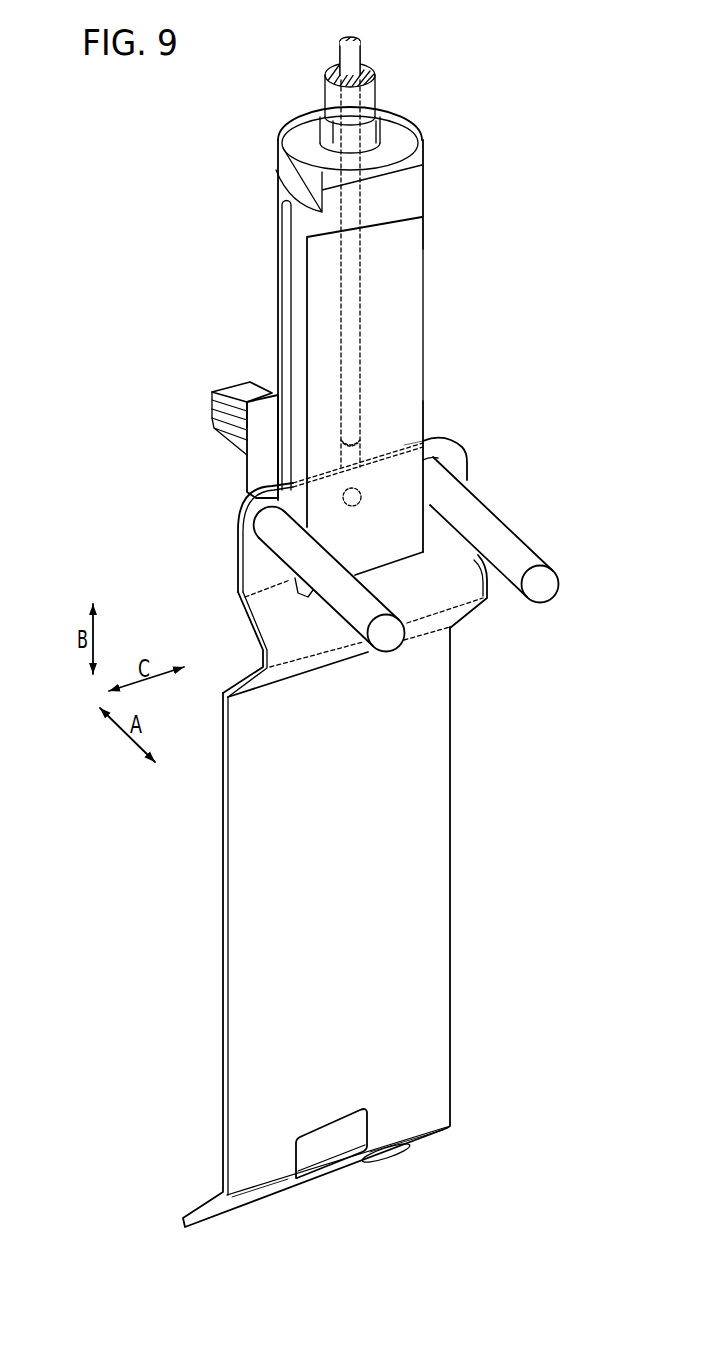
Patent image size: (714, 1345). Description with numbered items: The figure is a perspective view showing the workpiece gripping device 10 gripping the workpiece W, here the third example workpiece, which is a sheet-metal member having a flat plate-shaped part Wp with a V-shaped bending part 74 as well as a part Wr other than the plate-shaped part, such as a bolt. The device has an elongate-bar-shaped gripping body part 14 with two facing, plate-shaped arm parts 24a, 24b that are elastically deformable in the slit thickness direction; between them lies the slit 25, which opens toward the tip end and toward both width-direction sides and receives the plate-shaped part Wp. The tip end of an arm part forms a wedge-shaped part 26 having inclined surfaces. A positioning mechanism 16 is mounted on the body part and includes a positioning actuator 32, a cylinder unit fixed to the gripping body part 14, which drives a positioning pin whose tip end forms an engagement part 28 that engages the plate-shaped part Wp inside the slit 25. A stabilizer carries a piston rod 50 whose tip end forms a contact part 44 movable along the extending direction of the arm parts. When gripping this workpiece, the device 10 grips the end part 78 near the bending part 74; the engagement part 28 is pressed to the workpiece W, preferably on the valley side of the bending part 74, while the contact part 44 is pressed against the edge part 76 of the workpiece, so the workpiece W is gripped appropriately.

The workpiece gripping device 10 is at (265, 135).
The gripping body part 14 is at (405, 250).
The positioning mechanism 16 is at (243, 467).
The arm part 24a is at (282, 243).
The arm part 24b is at (415, 300).
The slit 25 is at (287, 473).
The wedge-shaped part 26 is at (306, 594).
The engagement part 28 is at (362, 506).
The positioning actuator 32 is at (226, 382).
The contact part 44 is at (343, 452).
The piston rod 50 is at (352, 53).
The bending part 74 is at (470, 605).
The edge part 76 is at (403, 445).
The end part 78 is at (265, 565).
The workpiece W is at (464, 444).
The part other than the plate-shaped part Wr is at (524, 545).
The plate-shaped part Wp is at (437, 770).